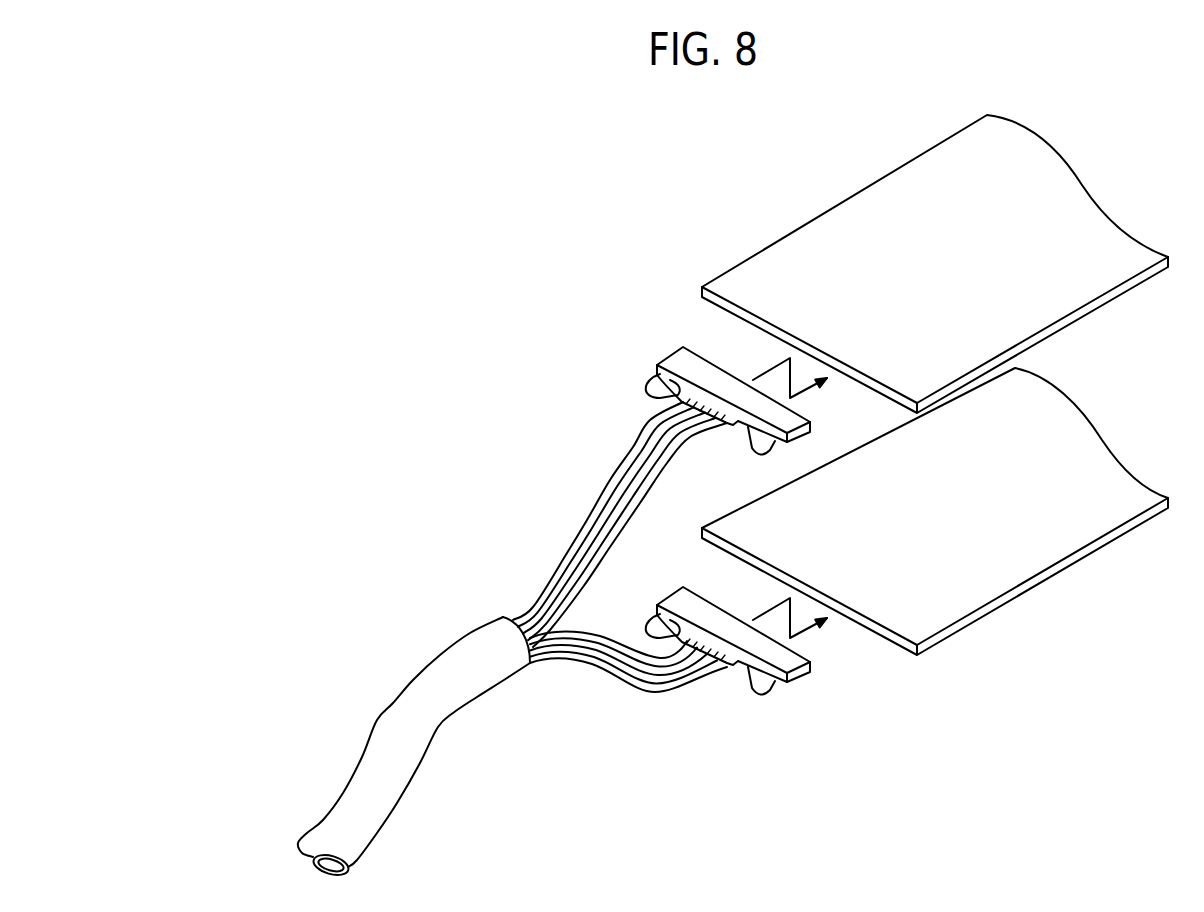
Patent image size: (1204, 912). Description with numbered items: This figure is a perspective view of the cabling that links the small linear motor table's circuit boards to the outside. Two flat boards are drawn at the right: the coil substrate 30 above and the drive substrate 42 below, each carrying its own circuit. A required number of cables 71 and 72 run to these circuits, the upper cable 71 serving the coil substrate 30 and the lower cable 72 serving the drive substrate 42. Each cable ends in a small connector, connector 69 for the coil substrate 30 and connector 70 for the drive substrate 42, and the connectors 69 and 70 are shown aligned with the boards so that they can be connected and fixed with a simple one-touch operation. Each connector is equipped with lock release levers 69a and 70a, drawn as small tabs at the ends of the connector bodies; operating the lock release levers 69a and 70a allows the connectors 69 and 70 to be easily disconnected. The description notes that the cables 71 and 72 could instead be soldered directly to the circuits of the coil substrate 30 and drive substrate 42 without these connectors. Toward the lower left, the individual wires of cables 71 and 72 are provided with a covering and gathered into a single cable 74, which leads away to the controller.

The coil substrate 30 is at (883, 175).
The drive substrate 42 is at (1047, 587).
The connector 69 is at (665, 348).
The lock release lever 69a is at (653, 388).
The connector 70 is at (822, 677).
The lock release lever 70a is at (652, 618).
The cable 71 is at (592, 478).
The cable 72 is at (652, 696).
The single cable 74 is at (355, 758).